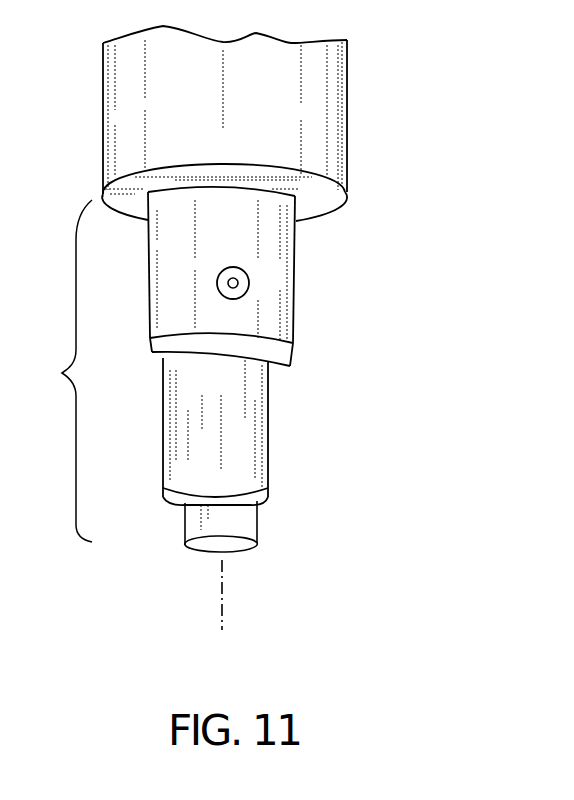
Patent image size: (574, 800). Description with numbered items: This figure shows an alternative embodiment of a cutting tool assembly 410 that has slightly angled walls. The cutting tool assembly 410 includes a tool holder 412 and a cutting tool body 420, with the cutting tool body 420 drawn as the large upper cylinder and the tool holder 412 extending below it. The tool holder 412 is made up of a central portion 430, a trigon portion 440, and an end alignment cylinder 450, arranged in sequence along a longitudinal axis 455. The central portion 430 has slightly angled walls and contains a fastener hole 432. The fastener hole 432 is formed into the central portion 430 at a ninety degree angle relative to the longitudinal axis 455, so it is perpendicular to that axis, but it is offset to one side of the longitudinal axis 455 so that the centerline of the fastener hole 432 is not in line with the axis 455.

The cutting tool assembly 410 is at (452, 68).
The tool holder 412 is at (53, 371).
The cutting tool body 420 is at (333, 143).
The central portion 430 is at (283, 303).
The fastener hole 432 is at (249, 276).
The trigon portion 440 is at (263, 450).
The end alignment cylinder 450 is at (257, 520).
The longitudinal axis 455 is at (225, 605).